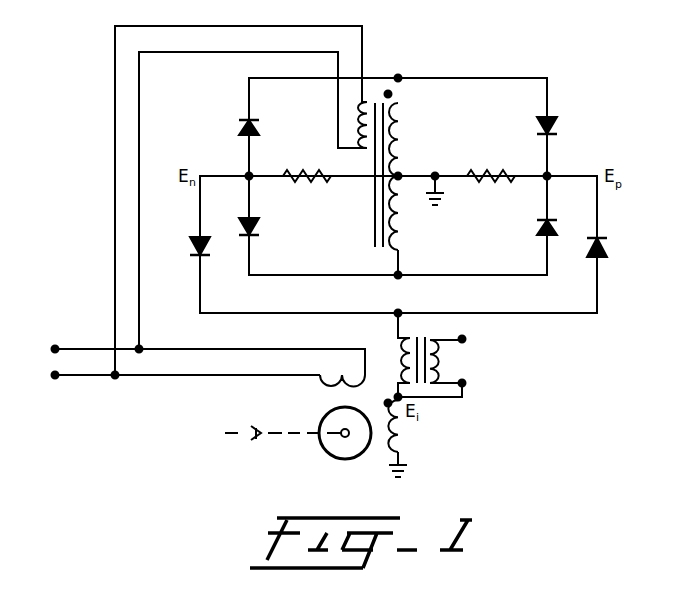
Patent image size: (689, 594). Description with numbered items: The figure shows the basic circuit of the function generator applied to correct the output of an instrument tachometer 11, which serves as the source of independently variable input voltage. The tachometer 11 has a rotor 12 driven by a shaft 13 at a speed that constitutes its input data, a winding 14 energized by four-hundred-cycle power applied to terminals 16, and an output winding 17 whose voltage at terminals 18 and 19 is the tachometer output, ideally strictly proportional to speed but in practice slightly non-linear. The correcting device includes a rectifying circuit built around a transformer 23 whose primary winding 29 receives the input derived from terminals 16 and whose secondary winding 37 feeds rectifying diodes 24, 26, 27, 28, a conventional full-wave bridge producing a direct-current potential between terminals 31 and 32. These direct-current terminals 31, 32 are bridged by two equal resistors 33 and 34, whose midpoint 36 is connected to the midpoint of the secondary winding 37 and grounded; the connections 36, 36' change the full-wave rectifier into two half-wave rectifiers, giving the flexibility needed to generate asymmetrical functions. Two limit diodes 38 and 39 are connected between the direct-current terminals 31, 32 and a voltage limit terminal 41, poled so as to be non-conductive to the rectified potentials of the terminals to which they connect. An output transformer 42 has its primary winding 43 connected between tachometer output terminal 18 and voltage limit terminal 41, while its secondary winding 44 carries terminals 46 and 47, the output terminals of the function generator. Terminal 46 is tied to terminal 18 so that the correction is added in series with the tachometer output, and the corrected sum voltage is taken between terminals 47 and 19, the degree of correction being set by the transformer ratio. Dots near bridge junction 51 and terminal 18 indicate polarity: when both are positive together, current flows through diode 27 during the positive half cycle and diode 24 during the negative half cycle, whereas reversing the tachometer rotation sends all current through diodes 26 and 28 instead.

The instrument tachometer 11 is at (287, 422).
The rotor 12 is at (327, 452).
The shaft 13 is at (301, 434).
The winding 14 is at (355, 374).
The terminals 16 is at (54, 374).
The output winding 17 is at (401, 436).
The terminal 18 is at (396, 395).
The terminal 19 is at (400, 460).
The transformer 23 is at (375, 229).
The rectifying diode 24 is at (240, 128).
The rectifying diode 26 is at (261, 225).
The rectifying diode 27 is at (552, 127).
The rectifying diode 28 is at (537, 228).
The primary winding 29 is at (366, 159).
The direct-current terminal 31 is at (248, 176).
The direct-current terminal 32 is at (549, 175).
The resistor 33 is at (315, 170).
The resistor 34 is at (480, 174).
The midpoint 36 is at (413, 169).
The connection 36' is at (445, 180).
The secondary winding 37 is at (400, 117).
The limit diode 38 is at (191, 248).
The limit diode 39 is at (608, 248).
The voltage limit terminal 41 is at (396, 314).
The output transformer 42 is at (420, 337).
The primary winding 43 is at (402, 368).
The secondary winding 44 is at (442, 360).
The terminal 46 is at (462, 383).
The terminal 47 is at (462, 339).
The bridge junction 51 is at (398, 77).